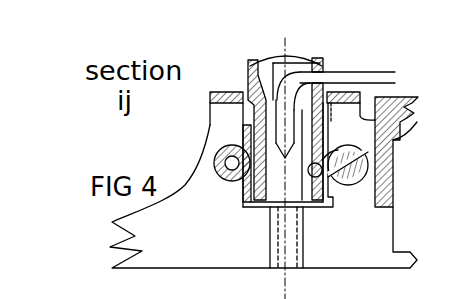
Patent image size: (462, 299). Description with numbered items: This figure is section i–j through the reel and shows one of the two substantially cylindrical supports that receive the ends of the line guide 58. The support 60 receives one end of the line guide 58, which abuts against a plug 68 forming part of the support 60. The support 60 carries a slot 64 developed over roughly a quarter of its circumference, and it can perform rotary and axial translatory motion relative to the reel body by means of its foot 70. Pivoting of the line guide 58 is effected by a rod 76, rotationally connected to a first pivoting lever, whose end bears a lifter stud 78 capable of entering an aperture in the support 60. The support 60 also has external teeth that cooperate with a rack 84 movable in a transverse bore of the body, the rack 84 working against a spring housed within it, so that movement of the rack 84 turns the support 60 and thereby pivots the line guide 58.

The line guide 58 is at (376, 80).
The support 60 is at (248, 66).
The slot 64 is at (324, 63).
The plug 68 is at (282, 180).
The foot 70 is at (296, 249).
The rod 76 is at (353, 188).
The lifter stud 78 is at (320, 160).
The rack 84 is at (226, 177).